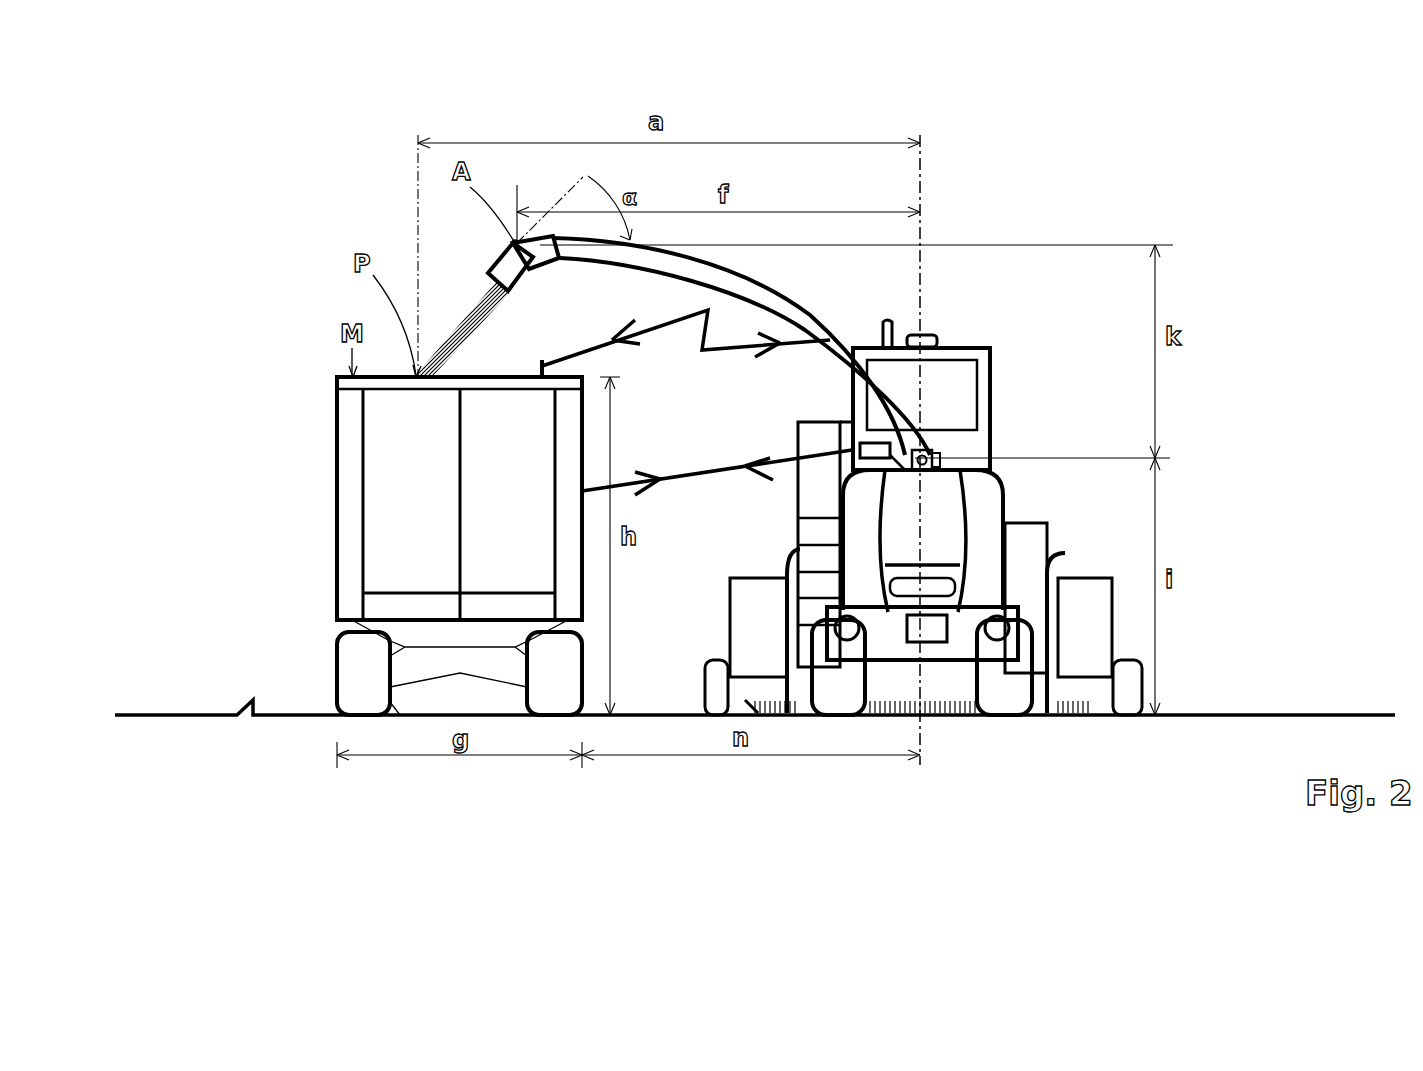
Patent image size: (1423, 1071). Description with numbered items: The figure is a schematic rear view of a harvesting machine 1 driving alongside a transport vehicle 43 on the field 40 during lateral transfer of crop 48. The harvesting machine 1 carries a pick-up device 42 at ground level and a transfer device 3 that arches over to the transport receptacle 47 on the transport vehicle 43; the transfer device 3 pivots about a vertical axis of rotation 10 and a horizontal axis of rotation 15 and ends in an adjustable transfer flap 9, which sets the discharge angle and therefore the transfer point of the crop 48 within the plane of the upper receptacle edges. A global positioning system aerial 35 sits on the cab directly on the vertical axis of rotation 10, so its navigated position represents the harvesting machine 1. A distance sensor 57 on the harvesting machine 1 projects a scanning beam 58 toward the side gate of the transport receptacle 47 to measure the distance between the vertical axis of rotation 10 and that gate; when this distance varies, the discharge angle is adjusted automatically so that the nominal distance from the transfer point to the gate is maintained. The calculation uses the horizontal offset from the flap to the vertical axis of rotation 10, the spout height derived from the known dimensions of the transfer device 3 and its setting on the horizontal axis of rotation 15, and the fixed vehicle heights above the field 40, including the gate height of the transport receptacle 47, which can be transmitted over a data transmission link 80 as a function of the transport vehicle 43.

The harvesting machine 1 is at (923, 450).
The transfer device 3 is at (807, 312).
The transfer flap 9 is at (525, 268).
The vertical axis of rotation 10 is at (928, 513).
The horizontal axis of rotation 15 is at (928, 457).
The global positioning system aerial 35 is at (945, 337).
The field 40 is at (1060, 718).
The pick-up device 42 is at (1090, 590).
The transport vehicle 43 is at (406, 546).
The transport receptacle 47 is at (392, 425).
The crop 48 is at (474, 330).
The distance sensor 57 is at (862, 443).
The scanning beam 58 is at (715, 480).
The data transmission link 80 is at (677, 323).